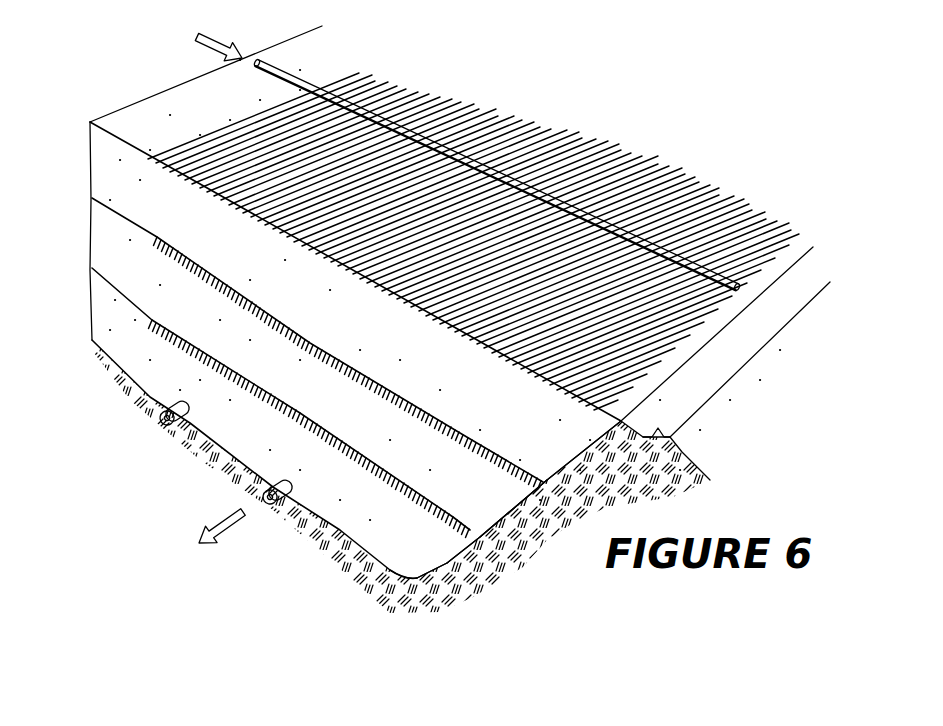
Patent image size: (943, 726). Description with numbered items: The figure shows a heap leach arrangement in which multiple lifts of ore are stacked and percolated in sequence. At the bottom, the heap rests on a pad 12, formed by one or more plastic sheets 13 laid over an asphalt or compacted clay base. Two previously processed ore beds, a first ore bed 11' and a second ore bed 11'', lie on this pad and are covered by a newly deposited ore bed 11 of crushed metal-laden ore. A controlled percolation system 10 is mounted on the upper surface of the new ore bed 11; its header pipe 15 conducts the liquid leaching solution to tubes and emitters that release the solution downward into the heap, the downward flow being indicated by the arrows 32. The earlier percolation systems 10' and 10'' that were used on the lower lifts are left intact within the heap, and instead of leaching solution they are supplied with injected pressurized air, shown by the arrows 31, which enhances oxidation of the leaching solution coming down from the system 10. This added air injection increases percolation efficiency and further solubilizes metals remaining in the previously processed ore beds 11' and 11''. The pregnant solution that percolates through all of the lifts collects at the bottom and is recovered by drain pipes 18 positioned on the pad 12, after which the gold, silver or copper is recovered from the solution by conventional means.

The controlled percolation system 10 is at (451, 284).
The underlying percolation system 10' is at (317, 383).
The underlying percolation system 10'' is at (550, 494).
The ore bed 11 is at (456, 476).
The first ore bed 11' is at (462, 588).
The second ore bed 11'' is at (527, 537).
The pad 12 is at (153, 393).
The plastic sheets 13 is at (773, 307).
The header pipe 15 is at (297, 73).
The drain pipes 18 is at (264, 491).
The oxidation arrows 31 is at (462, 505).
The leaching solution arrows 32 is at (522, 437).